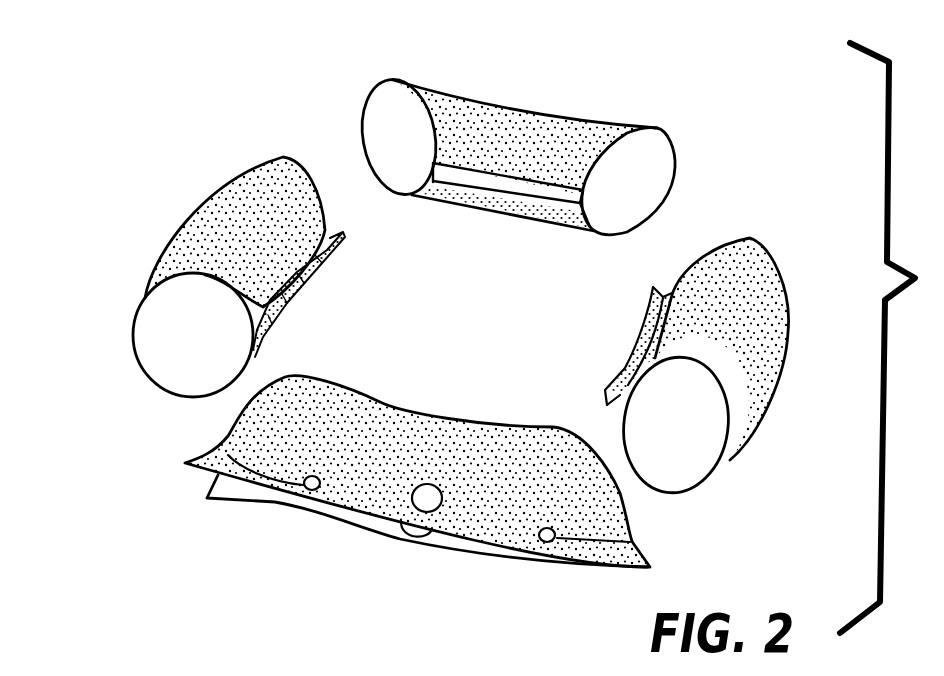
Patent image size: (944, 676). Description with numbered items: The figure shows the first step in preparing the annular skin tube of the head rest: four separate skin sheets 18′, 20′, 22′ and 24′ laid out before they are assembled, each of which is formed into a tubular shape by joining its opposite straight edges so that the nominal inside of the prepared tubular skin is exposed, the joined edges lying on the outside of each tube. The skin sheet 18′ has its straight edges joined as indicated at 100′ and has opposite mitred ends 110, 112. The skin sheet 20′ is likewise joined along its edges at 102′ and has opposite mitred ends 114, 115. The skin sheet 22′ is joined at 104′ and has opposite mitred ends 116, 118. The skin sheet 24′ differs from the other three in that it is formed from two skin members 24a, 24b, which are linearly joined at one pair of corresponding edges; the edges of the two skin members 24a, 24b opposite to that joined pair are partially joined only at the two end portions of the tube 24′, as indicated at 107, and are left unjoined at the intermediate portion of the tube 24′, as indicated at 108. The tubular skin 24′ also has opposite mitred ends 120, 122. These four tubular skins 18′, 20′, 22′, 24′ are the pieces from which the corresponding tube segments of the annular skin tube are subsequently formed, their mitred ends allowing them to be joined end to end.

The skin sheet 18′ is at (549, 160).
The mitred end 112 is at (417, 83).
The mitred end 110 is at (656, 153).
The linearly joined edges 100′ is at (533, 213).
The skin sheet 20′ is at (235, 242).
The mitred end 115 is at (287, 162).
The mitred end 114 is at (140, 290).
The linearly joined edges 102′ is at (318, 258).
The skin sheet 22′ is at (706, 362).
The mitred end 118 is at (750, 238).
The mitred end 116 is at (732, 458).
The linearly joined edges 104′ is at (653, 328).
The skin sheet 24′ is at (422, 482).
The skin member 24a is at (442, 420).
The skin member 24b is at (367, 525).
The mitred end 120 is at (243, 423).
The mitred end 122 is at (620, 512).
The partially joined edges 107 is at (285, 492).
The unjoined intermediate portion 108 is at (462, 545).